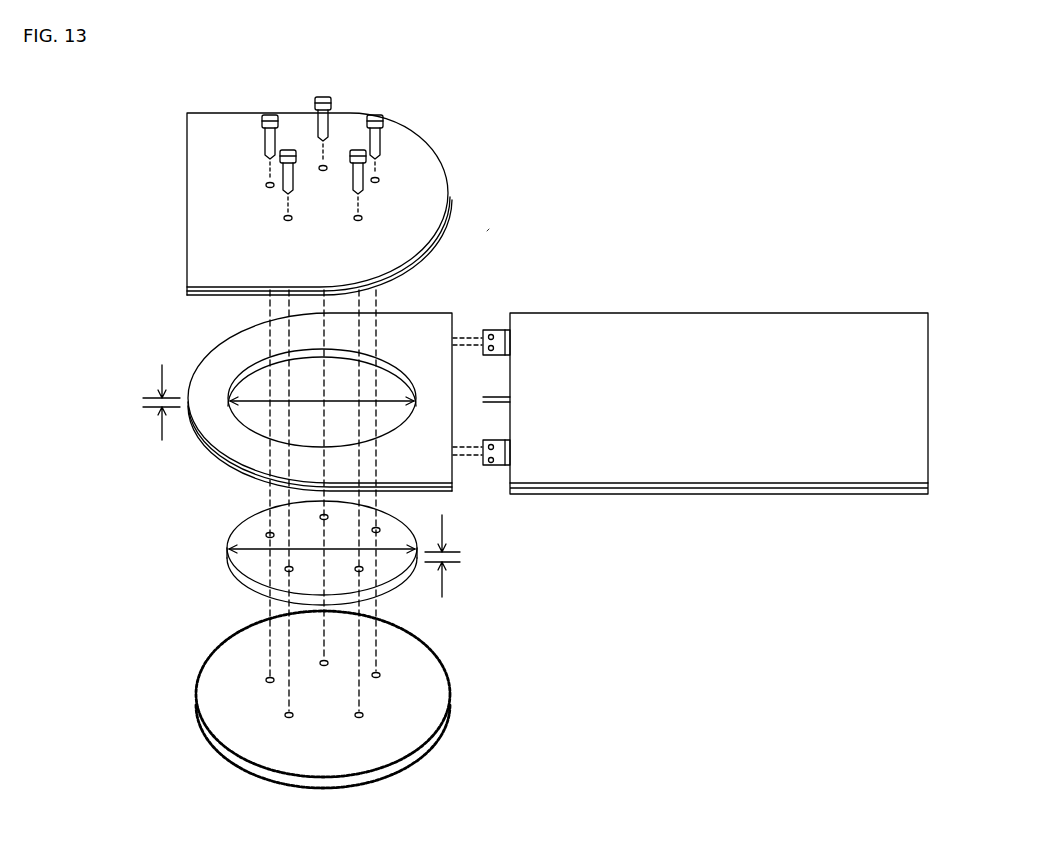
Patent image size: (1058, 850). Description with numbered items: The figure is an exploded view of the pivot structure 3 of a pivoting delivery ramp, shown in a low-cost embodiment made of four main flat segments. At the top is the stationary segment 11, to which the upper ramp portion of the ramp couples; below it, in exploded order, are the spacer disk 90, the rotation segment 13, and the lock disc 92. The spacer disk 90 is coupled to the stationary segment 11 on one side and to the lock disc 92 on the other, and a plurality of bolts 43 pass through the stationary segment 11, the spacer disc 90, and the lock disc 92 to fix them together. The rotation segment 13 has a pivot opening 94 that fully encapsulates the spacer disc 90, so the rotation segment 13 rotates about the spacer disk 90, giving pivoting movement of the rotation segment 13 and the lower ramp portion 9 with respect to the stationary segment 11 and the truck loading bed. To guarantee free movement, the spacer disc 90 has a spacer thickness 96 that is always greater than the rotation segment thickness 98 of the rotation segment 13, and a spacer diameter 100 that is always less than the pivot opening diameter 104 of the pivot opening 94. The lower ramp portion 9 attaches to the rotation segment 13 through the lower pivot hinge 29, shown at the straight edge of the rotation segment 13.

The pivot structure 3 is at (488, 230).
The lower ramp portion 9 is at (692, 427).
The stationary segment 11 is at (222, 205).
The rotation segment 13 is at (245, 450).
The lower pivot hinge 29 is at (494, 465).
The bolts 43 is at (383, 120).
The spacer disk 90 is at (262, 568).
The lock disc 92 is at (233, 697).
The pivot opening 94 is at (253, 367).
The spacer thickness 96 is at (449, 558).
The rotation segment thickness 98 is at (150, 409).
The spacer diameter 100 is at (232, 548).
The pivot opening diameter 104 is at (348, 400).